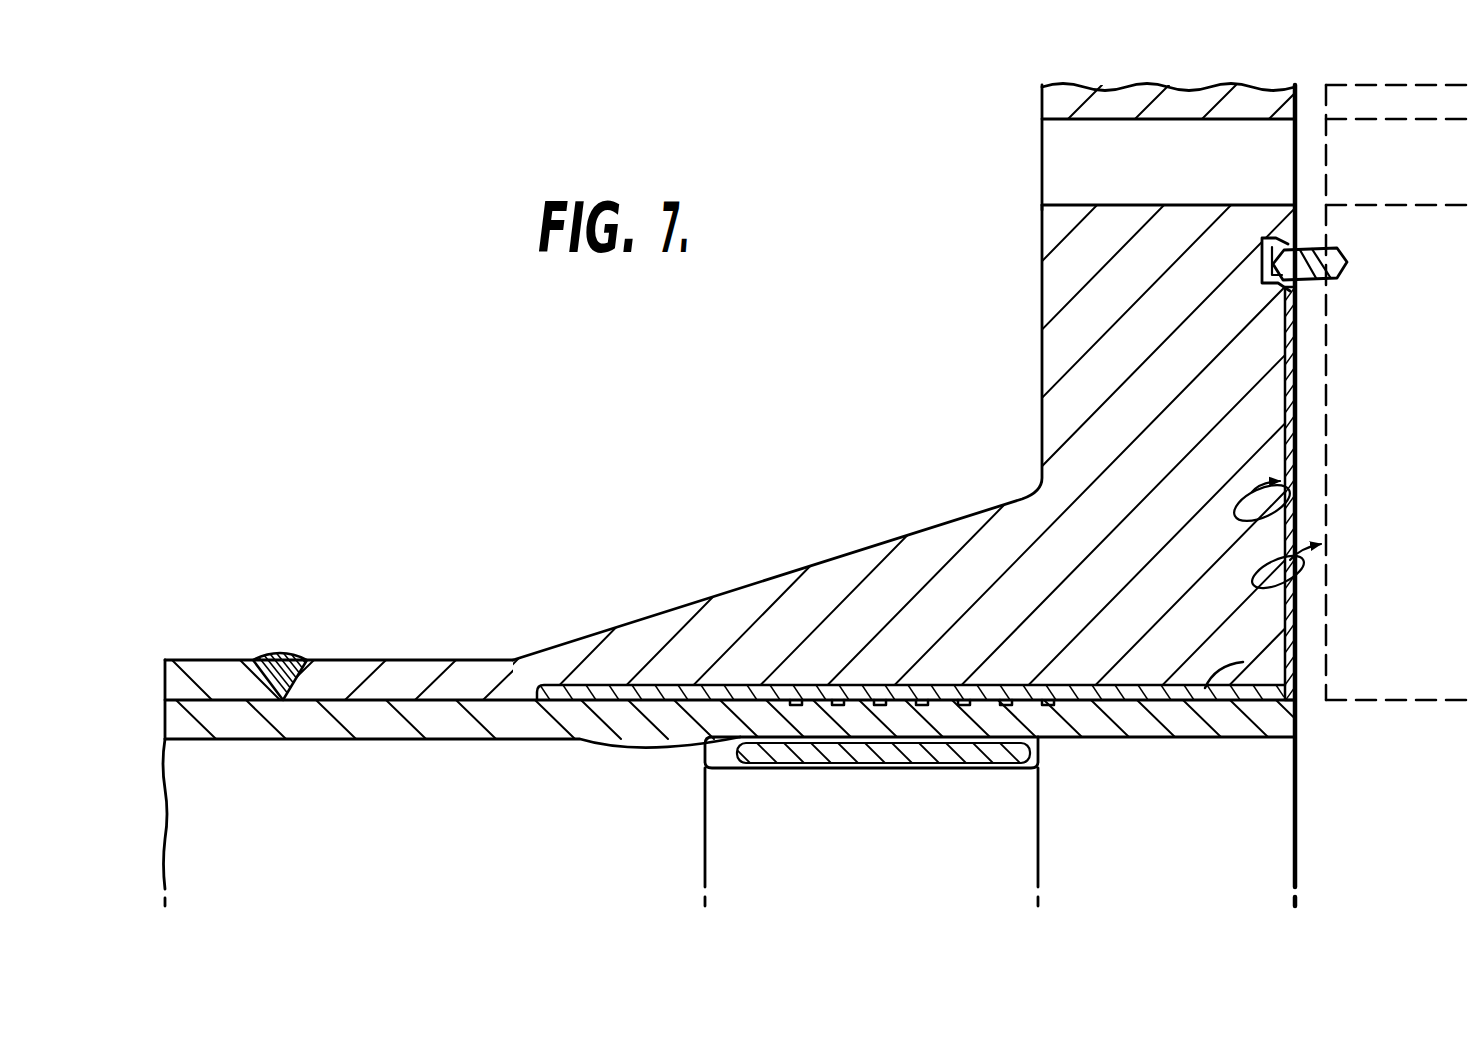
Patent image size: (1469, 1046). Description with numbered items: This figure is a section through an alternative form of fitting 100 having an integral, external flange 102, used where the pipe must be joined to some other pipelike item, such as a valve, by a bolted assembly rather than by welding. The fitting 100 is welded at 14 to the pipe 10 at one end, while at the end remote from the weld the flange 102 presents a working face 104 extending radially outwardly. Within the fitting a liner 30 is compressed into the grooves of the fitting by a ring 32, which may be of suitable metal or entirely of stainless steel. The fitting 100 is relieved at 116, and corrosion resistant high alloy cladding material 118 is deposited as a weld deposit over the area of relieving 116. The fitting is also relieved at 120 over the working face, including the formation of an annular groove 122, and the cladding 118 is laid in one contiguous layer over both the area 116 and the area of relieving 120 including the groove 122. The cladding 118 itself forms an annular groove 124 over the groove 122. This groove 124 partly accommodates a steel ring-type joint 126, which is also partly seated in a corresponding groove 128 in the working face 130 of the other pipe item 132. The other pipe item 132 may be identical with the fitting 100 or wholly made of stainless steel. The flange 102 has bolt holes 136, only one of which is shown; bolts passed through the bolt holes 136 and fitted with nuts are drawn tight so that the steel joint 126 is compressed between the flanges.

The pipe 10 is at (203, 663).
The weld 14 is at (285, 660).
The liner 30 is at (392, 727).
The ring 32 is at (902, 851).
The fitting 100 is at (946, 505).
The external flange 102 is at (1143, 348).
The working face 104 is at (1302, 389).
The relieving 116 is at (752, 680).
The cladding material 118 is at (1283, 663).
The relieving over the working face 120 is at (1290, 514).
The annular groove 122 is at (1256, 262).
The annular groove 124 is at (1307, 247).
The ring-type joint 126 is at (1297, 290).
The groove 128 is at (1347, 254).
The working face 130 is at (1300, 583).
The other pipe item 132 is at (1362, 710).
The bolt holes 136 is at (1085, 163).